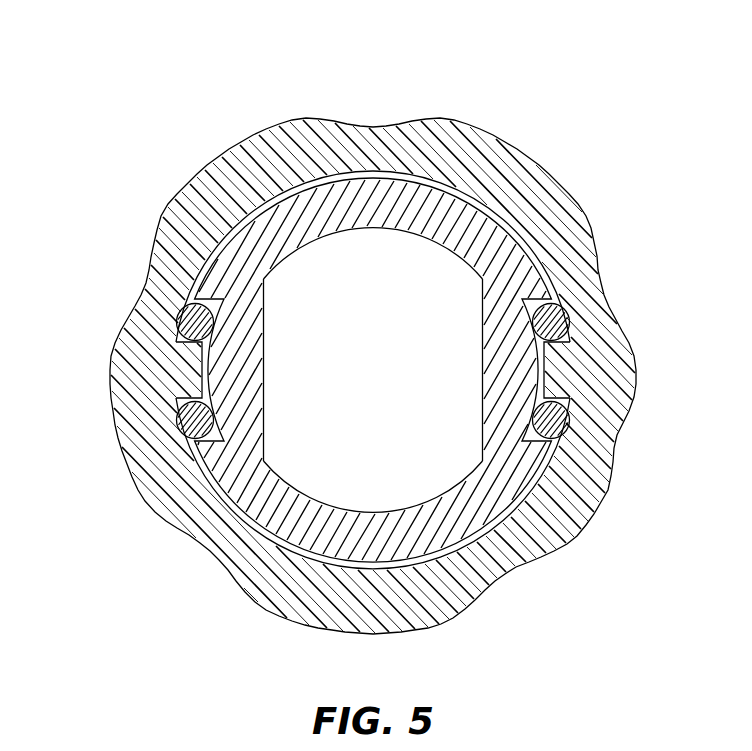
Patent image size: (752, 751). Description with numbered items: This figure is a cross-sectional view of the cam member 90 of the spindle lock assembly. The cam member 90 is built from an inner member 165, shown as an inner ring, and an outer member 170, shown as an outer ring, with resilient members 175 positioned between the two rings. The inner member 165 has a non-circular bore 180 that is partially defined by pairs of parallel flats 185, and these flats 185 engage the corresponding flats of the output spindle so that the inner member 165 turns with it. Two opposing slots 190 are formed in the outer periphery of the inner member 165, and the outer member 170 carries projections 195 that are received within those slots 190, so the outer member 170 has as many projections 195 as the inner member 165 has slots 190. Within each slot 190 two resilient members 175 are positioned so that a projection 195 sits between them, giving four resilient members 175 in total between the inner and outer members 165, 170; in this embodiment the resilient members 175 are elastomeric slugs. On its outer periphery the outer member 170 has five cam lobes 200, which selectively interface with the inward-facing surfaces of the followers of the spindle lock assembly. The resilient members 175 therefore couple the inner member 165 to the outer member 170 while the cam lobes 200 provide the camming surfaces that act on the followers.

The cam member 90 is at (373, 357).
The inner member 165 is at (357, 401).
The outer member 170 is at (373, 374).
The resilient member 175 is at (177, 323).
The non-circular bore 180 is at (333, 460).
The flats 185 is at (266, 363).
The slots 190 is at (205, 212).
The projections 195 is at (181, 406).
The cam lobes 200 is at (239, 137).